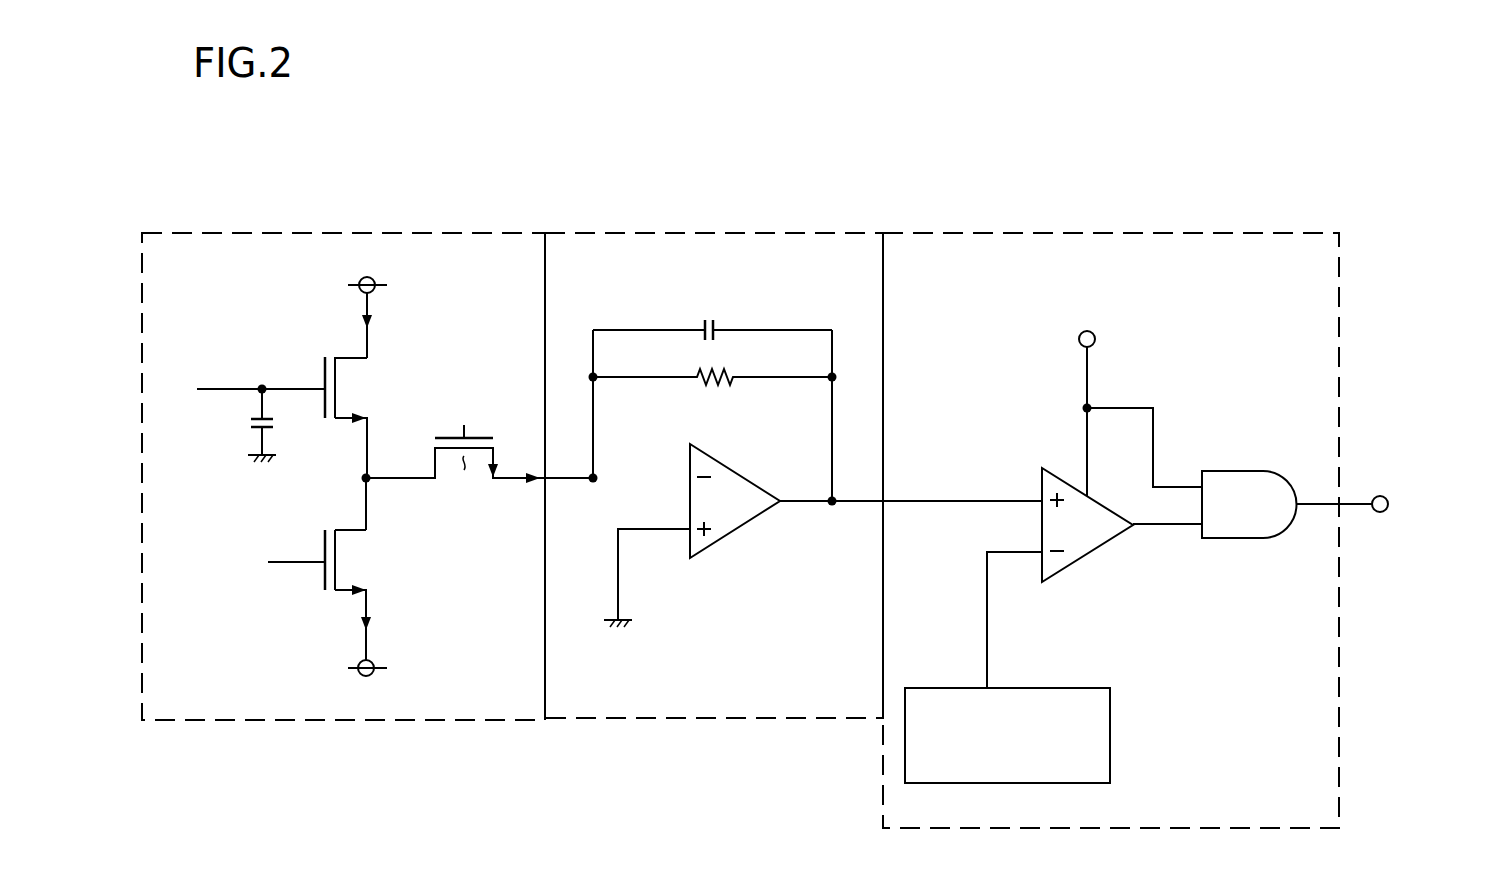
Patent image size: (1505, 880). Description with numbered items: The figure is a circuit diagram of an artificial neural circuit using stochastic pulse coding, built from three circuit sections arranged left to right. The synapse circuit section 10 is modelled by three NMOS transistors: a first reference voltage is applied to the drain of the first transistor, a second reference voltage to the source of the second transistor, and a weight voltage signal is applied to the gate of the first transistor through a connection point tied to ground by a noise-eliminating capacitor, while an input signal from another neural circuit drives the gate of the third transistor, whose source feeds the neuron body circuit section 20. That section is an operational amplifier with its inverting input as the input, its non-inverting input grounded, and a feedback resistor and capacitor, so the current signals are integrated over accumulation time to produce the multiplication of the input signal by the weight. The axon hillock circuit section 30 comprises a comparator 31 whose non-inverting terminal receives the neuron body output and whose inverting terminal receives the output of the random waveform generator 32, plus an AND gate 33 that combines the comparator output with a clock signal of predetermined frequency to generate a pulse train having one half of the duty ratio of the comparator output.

The synapse circuit section 10 is at (330, 232).
The neuron body circuit section 20 is at (712, 232).
The axon hillock circuit section 30 is at (1105, 232).
The comparator 31 is at (1098, 548).
The random waveform generator 32 is at (1110, 735).
The AND gate 33 is at (1242, 470).